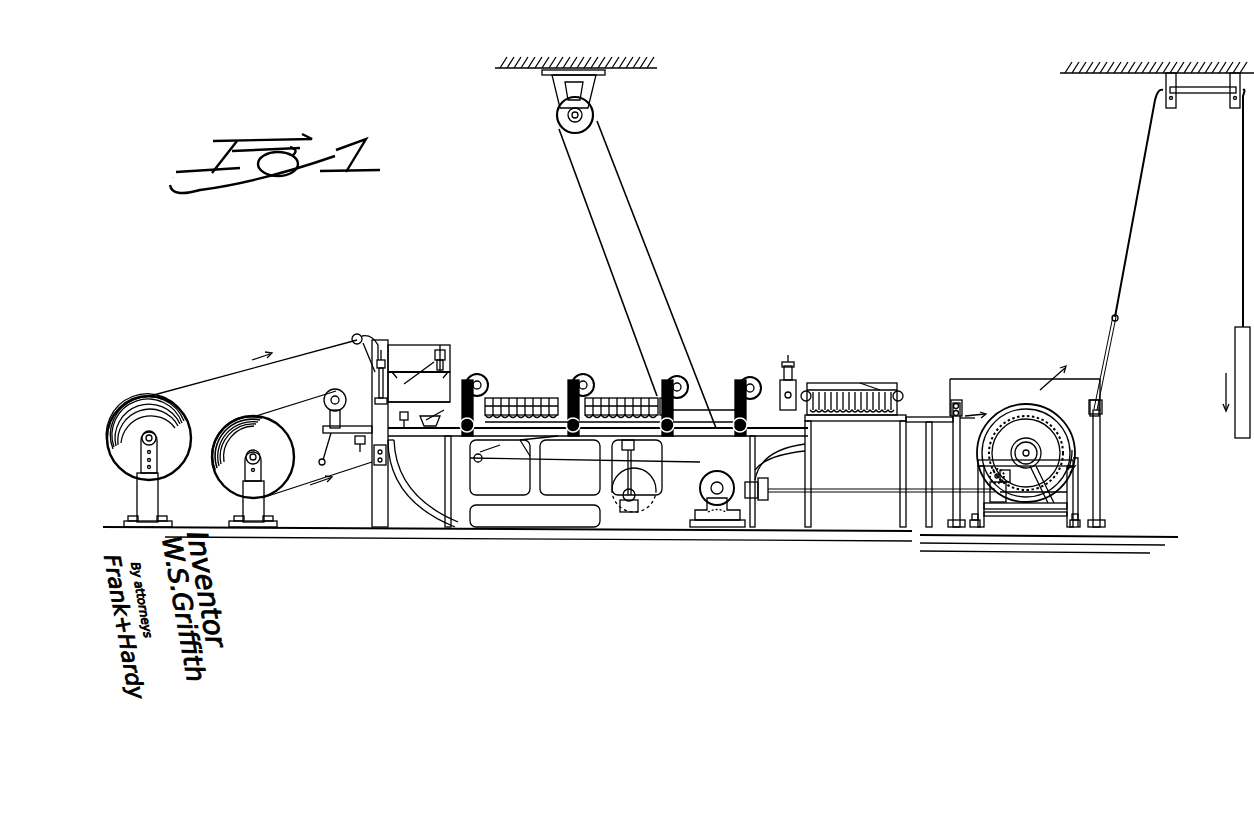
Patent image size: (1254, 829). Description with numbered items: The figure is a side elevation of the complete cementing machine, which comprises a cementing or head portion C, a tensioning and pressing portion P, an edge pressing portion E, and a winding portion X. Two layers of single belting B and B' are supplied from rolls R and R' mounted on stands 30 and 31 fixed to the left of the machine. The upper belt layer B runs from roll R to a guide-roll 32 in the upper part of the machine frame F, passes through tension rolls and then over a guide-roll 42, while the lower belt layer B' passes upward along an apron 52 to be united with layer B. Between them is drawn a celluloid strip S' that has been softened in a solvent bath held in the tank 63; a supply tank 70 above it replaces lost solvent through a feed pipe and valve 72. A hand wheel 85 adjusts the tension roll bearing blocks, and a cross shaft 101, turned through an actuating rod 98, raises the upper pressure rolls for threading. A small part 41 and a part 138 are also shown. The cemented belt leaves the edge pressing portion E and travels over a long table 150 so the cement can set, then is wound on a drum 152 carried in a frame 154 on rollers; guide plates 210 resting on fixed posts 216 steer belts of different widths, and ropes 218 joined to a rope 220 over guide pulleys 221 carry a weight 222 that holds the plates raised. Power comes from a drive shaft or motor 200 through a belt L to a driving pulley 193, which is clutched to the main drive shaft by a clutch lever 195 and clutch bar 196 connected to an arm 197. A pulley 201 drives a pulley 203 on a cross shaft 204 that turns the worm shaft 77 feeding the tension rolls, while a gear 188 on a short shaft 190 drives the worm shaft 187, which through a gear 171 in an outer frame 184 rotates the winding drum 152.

The drive shaft or motor 200 is at (594, 113).
The belt L is at (706, 290).
The guide pulleys 221 is at (1178, 95).
The rope 220 is at (1135, 250).
The ropes 218 is at (1108, 365).
The weight 222 is at (1223, 264).
The roll of single belting R is at (160, 437).
The roll of single belting R' is at (253, 448).
The stand 30 is at (140, 503).
The stand 31 is at (244, 507).
The upper single belt layer B is at (253, 368).
The lower single belt layer B' is at (312, 450).
The guide pulley S' is at (347, 411).
The tank 63 is at (342, 449).
The guide-roll 32 is at (356, 353).
The machine frame F is at (424, 497).
The cementing or head portion C is at (419, 360).
The guide-roll 42 is at (450, 342).
The cutter rod 41 is at (390, 368).
The supply tank 70 is at (440, 385).
The valve 72 is at (422, 416).
The apron 52 is at (395, 465).
The hand wheel 85 is at (485, 380).
The tensioning and pressing portion P is at (580, 372).
The worm shaft 77 is at (686, 432).
The clutch lever 195 is at (735, 470).
The table 150 is at (886, 428).
The edge pressing portion E is at (848, 375).
The driving pulley 193 is at (704, 503).
The gear 188 is at (766, 500).
The worm shaft 187 is at (887, 487).
The arm 197 is at (482, 460).
The link 138 is at (486, 452).
The cross shaft 101 is at (522, 458).
The actuating rod 98 is at (560, 440).
The clutch bar 196 is at (552, 466).
The pulley 203 is at (612, 484).
The cross shaft 204 is at (634, 462).
The pulley 201 is at (643, 492).
The guide plates 210 is at (952, 383).
The gear 171 is at (1000, 440).
The drum 152 is at (1060, 408).
The short shaft 190 is at (1024, 446).
The outer frame 184 is at (1073, 480).
The frame 154 is at (1020, 514).
The fixed posts 216 is at (1100, 476).
The winding portion X is at (1030, 370).